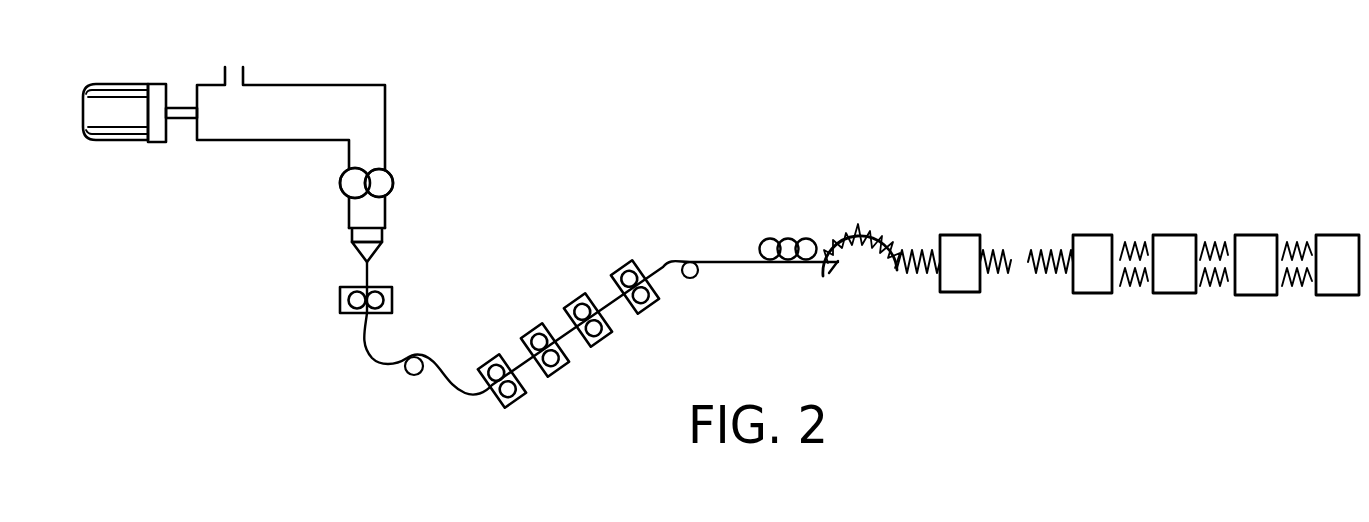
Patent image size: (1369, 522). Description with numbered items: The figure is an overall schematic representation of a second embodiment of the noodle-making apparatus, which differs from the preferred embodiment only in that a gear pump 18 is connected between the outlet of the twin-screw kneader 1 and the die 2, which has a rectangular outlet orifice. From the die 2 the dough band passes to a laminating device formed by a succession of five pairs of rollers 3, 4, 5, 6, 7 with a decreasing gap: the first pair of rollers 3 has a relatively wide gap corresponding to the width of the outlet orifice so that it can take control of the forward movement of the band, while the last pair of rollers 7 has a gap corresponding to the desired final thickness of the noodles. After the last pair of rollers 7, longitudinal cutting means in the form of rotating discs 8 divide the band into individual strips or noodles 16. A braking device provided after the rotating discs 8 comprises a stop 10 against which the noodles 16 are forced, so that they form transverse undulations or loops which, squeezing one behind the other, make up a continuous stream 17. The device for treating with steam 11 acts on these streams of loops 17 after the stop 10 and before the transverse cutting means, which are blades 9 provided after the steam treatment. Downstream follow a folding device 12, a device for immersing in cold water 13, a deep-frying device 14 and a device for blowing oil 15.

The twin-screw kneader 1 is at (300, 72).
The die with a rectangular outlet orifice 2 is at (358, 250).
The first pair of rollers 3 is at (384, 287).
The pair of rollers 4 is at (487, 362).
The pair of rollers 5 is at (530, 327).
The pair of rollers 6 is at (575, 298).
The last pair of rollers 7 is at (625, 263).
The rotating discs 8 is at (788, 237).
The blades 9 is at (1012, 257).
The stop 10 is at (850, 260).
The device for treating with steam 11 is at (960, 235).
The folding device 12 is at (1090, 235).
The device for immersing in cold water 13 is at (1173, 235).
The deep-frying device 14 is at (1252, 235).
The device for blowing oil 15 is at (1332, 235).
The strips or noodles 16 is at (817, 263).
The continuous stream 17 is at (870, 228).
The gear pump 18 is at (338, 185).